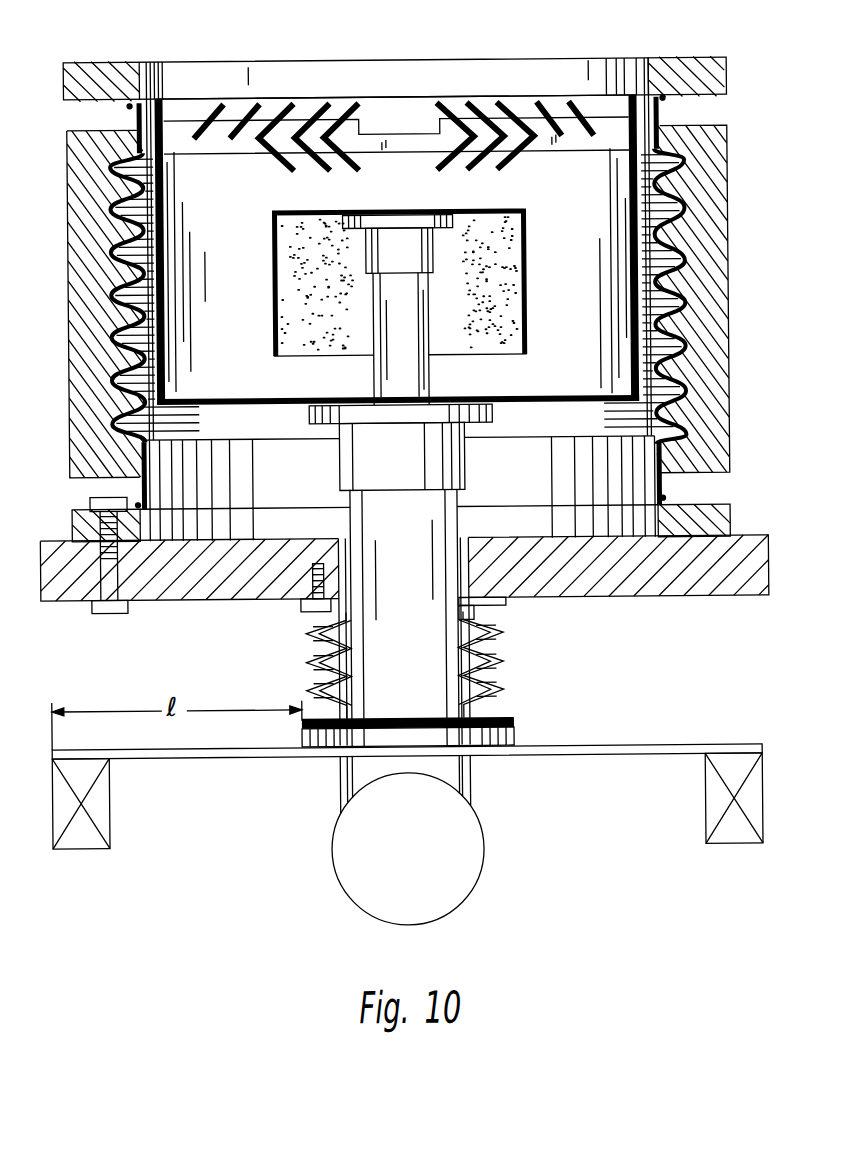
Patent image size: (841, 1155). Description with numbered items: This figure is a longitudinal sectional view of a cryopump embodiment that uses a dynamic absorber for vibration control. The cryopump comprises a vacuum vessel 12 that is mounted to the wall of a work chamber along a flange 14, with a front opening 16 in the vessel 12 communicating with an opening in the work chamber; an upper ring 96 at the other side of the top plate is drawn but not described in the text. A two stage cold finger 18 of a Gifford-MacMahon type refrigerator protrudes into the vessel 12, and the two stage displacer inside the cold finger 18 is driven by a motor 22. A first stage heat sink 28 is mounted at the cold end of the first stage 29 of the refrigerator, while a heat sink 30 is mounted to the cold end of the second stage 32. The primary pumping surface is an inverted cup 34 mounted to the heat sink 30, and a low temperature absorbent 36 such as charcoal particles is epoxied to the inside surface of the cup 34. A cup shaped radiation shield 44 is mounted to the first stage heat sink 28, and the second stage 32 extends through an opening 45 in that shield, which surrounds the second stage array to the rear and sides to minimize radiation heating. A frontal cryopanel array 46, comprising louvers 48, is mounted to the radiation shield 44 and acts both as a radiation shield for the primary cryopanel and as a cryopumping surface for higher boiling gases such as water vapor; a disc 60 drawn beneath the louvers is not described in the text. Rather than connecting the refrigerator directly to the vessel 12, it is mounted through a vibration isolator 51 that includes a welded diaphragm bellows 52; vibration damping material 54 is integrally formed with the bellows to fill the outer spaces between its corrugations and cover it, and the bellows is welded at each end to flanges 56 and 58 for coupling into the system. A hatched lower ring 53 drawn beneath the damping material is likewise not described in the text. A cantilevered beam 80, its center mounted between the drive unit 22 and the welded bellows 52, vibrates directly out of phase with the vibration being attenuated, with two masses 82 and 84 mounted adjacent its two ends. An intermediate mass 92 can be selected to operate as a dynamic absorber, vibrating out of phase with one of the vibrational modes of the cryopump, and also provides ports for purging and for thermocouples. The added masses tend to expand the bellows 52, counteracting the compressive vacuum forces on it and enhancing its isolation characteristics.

The vacuum vessel 12 is at (640, 338).
The flange 14 is at (78, 103).
The front opening 16 is at (510, 57).
The two stage cold finger 18 is at (467, 457).
The motor 22 is at (470, 874).
The first stage heat sink 28 is at (322, 410).
The first stage 29 is at (415, 591).
The heat sink 30 is at (372, 216).
The second stage 32 is at (388, 318).
The inverted cup 34 is at (528, 286).
The low temperature absorbent 36 is at (517, 330).
The radiation shield 44 is at (168, 292).
The opening 45 is at (375, 396).
The frontal cryopanel array 46 is at (305, 88).
The louvers 48 is at (360, 98).
The vibration isolator 51 is at (468, 678).
The bellows 52 is at (500, 664).
The lower ring 53 is at (738, 516).
The vibration damping material 54 is at (735, 290).
The flange 56 is at (310, 606).
The flange 58 is at (429, 718).
The disc 60 is at (608, 146).
The cantilevered beam 80 is at (600, 746).
The mass 82 is at (703, 808).
The mass 84 is at (108, 818).
The intermediate mass 92 is at (616, 598).
The upper ring right 96 is at (680, 58).